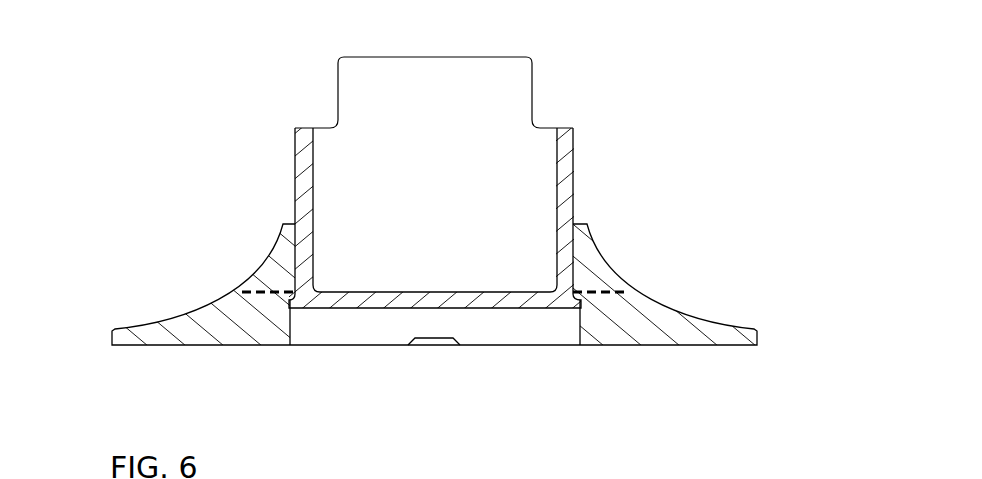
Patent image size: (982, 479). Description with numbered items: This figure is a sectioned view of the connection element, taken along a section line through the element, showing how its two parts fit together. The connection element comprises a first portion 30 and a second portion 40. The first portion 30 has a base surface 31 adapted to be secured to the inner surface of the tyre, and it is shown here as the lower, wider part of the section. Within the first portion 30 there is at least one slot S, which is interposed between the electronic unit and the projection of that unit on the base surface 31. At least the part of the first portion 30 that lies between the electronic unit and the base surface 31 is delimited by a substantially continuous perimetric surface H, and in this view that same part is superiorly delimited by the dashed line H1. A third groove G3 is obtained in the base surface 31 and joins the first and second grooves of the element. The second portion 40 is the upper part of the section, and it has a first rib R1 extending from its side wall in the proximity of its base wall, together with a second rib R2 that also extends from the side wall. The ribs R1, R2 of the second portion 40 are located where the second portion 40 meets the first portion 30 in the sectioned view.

The second portion 40 is at (580, 157).
The first portion 30 is at (617, 362).
The base surface 31 is at (708, 345).
The slot S is at (353, 323).
The third groove G3 is at (437, 343).
The second rib R2 is at (295, 218).
The first rib R1 is at (297, 278).
The dashed line H1 is at (241, 292).
The perimetric surface H is at (160, 323).